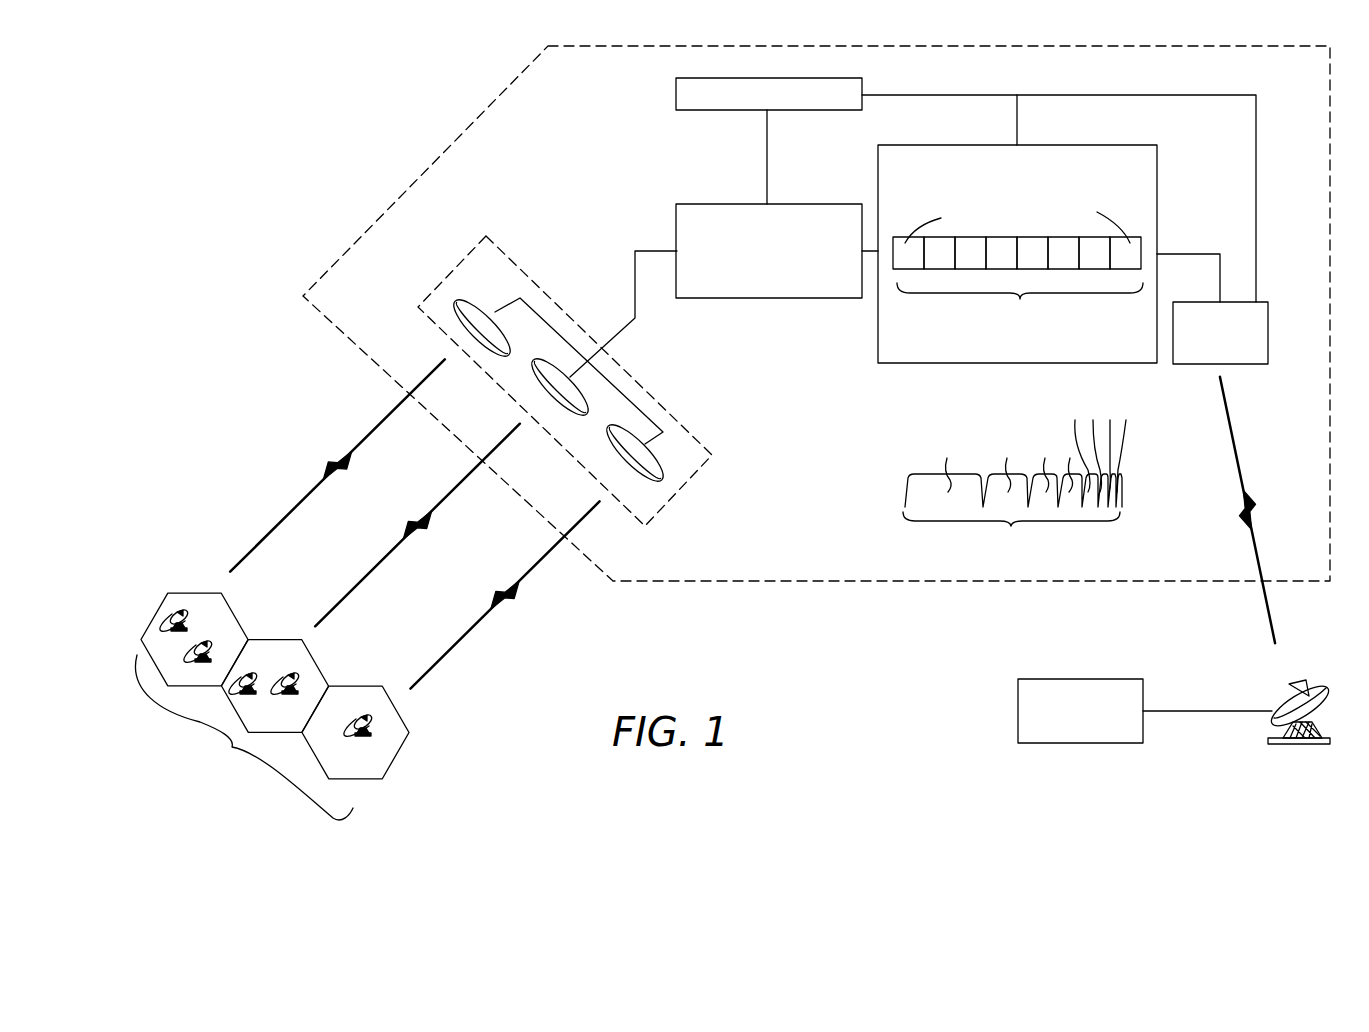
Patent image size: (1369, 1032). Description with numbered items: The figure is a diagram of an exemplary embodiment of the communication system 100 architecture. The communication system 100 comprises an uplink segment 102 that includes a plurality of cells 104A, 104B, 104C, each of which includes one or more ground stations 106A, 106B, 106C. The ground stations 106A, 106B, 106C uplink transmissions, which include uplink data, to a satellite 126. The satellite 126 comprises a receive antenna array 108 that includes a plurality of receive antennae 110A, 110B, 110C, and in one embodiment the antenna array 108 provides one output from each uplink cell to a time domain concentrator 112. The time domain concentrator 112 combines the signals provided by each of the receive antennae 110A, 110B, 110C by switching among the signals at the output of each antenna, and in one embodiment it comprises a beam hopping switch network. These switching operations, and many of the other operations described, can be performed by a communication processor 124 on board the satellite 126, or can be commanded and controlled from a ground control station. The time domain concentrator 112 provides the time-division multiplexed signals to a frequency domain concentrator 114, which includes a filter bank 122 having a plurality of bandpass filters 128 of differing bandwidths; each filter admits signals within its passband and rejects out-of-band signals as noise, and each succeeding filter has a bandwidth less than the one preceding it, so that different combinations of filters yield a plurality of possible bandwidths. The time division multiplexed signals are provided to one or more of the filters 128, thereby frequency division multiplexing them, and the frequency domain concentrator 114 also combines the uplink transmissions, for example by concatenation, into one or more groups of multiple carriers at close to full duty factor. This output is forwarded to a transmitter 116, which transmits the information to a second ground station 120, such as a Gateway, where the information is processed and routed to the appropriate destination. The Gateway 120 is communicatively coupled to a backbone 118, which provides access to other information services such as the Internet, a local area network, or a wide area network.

The communication system 100 is at (338, 194).
The uplink segment 102 is at (244, 737).
The cell 104A is at (237, 600).
The cell 104B is at (317, 660).
The cell 104C is at (407, 722).
The ground station 106A is at (208, 634).
The ground station 106B is at (258, 667).
The ground station 106C is at (366, 735).
The receive antenna array 108 is at (693, 433).
The receive antenna 110A is at (458, 305).
The receive antenna 110B is at (543, 385).
The receive antenna 110C is at (667, 488).
The time domain concentrator 112 is at (747, 204).
The frequency domain concentrator 114 is at (947, 364).
The transmitter 116 is at (1212, 364).
The backbone 118 is at (1053, 679).
The second ground station (Gateway) 120 is at (1282, 706).
The filter bank 122 is at (1018, 264).
The communication processor 124 is at (676, 95).
The satellite 126 is at (912, 583).
The bandpass filters 128 is at (1018, 478).